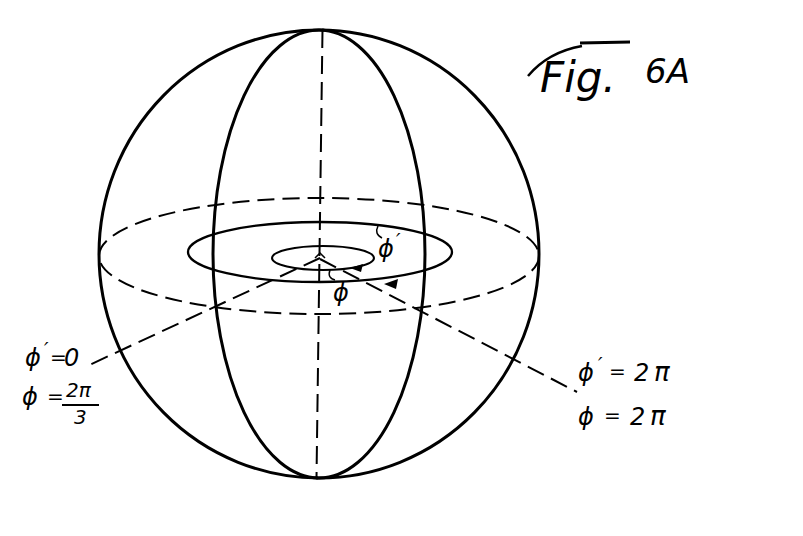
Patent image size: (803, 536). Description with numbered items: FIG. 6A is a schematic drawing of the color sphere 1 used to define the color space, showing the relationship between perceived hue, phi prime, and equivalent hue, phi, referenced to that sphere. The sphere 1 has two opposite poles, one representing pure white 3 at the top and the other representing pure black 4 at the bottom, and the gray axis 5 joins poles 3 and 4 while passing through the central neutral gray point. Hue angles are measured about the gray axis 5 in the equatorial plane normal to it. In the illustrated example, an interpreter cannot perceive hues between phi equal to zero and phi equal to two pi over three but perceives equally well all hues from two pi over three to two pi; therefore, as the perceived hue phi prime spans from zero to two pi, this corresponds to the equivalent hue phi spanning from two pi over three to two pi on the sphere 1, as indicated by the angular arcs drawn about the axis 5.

The sphere 1 is at (530, 192).
The pure white pole 3 is at (323, 30).
The pure black pole 4 is at (316, 478).
The gray axis 5 is at (322, 152).